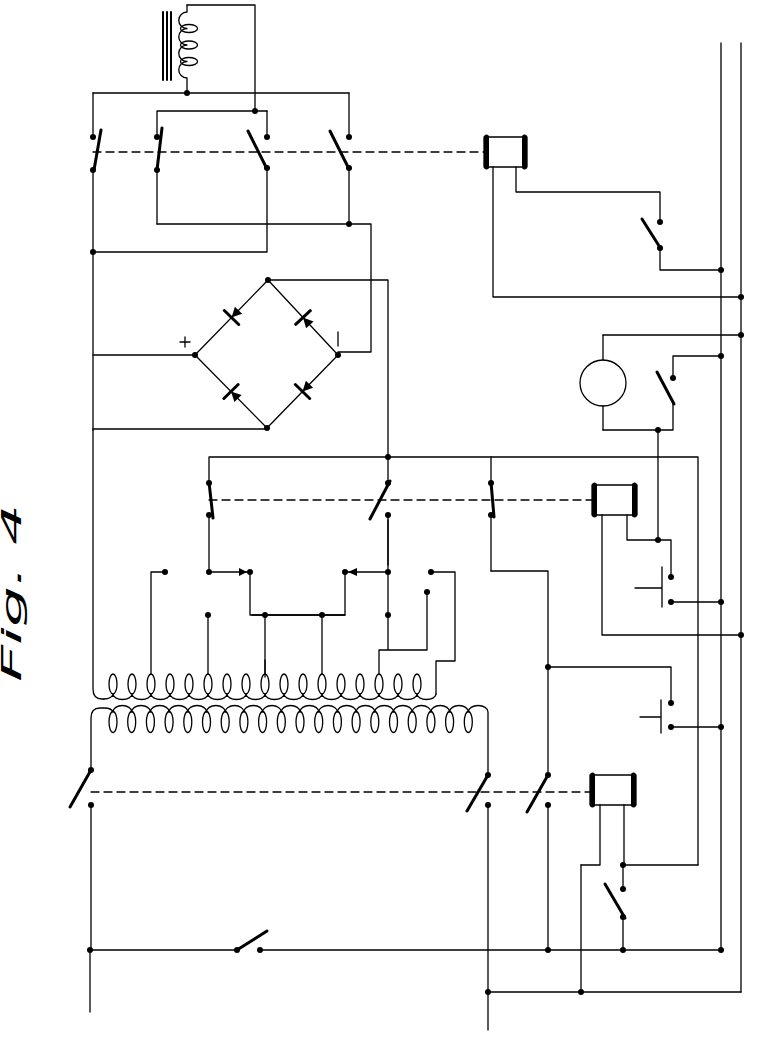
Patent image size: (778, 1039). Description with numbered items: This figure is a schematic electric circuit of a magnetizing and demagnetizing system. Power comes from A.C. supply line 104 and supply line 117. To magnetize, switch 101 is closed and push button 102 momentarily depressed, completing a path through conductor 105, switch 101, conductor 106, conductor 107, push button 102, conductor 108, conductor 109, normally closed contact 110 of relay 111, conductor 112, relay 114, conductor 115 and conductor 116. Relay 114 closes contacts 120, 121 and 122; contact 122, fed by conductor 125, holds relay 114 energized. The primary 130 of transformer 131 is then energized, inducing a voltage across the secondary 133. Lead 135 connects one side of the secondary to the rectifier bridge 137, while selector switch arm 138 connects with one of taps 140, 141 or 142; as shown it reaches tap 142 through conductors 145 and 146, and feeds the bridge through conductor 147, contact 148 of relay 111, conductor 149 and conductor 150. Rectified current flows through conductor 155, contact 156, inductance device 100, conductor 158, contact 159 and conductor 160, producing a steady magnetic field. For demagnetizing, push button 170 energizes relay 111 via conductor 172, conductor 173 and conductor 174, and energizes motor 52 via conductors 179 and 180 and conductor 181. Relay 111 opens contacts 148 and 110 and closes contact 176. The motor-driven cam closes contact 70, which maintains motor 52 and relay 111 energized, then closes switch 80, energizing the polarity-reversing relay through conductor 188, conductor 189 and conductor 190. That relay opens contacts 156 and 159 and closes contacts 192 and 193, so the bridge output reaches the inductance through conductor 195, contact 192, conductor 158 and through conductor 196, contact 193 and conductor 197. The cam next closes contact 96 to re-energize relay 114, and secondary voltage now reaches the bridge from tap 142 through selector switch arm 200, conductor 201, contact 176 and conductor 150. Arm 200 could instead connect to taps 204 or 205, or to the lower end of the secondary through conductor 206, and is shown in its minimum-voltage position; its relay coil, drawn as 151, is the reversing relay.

The motor 52 is at (578, 377).
The contact of switch 70 is at (678, 398).
The switch 80 is at (668, 232).
The contact 96 is at (621, 900).
The inductance device 100 is at (197, 41).
The switch 101 is at (250, 940).
The push button 102 is at (655, 708).
The A.C. supply line 104 is at (88, 975).
The conductor 105 is at (163, 950).
The conductor 106 is at (352, 950).
The conductor 107 is at (681, 727).
The conductor 108 is at (552, 670).
The conductor 109 is at (548, 617).
The normally closed contact of relay 111 110 is at (495, 513).
The relay 111 is at (614, 500).
The conductor 112 is at (541, 457).
The relay 114 is at (608, 820).
The conductor 115 is at (581, 893).
The conductor 116 is at (525, 993).
The supply line 117 is at (485, 1010).
The contact of relay 114 120 is at (80, 790).
The contact of relay 114 121 is at (478, 790).
The contact of relay 114 122 is at (540, 785).
The conductor 125 is at (545, 907).
The primary 130 is at (278, 730).
The transformer 131 is at (77, 702).
The secondary 133 is at (132, 680).
The lead 135 is at (90, 552).
The rectifier bridge 137 is at (217, 354).
The selector switch arm 138 is at (228, 572).
The secondary tap 140 is at (153, 670).
The secondary tap 141 is at (205, 672).
The secondary tap 142 is at (263, 672).
The conductor 145 is at (270, 672).
The conductor 146 is at (253, 593).
The conductor 147 is at (209, 550).
The contact of relay 111 148 is at (209, 500).
The conductor 149 is at (337, 457).
The conductor 150 is at (390, 368).
The relay coil 151 is at (505, 152).
The conductor 155 is at (93, 350).
The contact of relay 157 156 is at (93, 157).
The conductor 158 is at (257, 58).
The contact of relay 157 159 is at (157, 160).
The conductor 160 is at (293, 224).
The push button 170 is at (660, 600).
The conductor 172 is at (687, 600).
The conductor 173 is at (641, 540).
The conductor 174 is at (601, 597).
The contact of relay 111 176 is at (381, 504).
The conductor 179 is at (661, 508).
The conductor 180 is at (623, 432).
The conductor 181 is at (651, 335).
The conductor 188 is at (698, 268).
The conductor 189 is at (590, 192).
The conductor 190 is at (491, 248).
The contact of relay 157 192 is at (248, 133).
The contact of relay 157 193 is at (330, 132).
The conductor 195 is at (180, 252).
The conductor 196 is at (350, 190).
The conductor 197 is at (325, 93).
The selector switch arm 200 is at (372, 567).
The conductor 201 is at (397, 540).
The secondary tap 204 is at (320, 670).
The secondary tap 205 is at (377, 670).
The conductor 206 is at (456, 637).